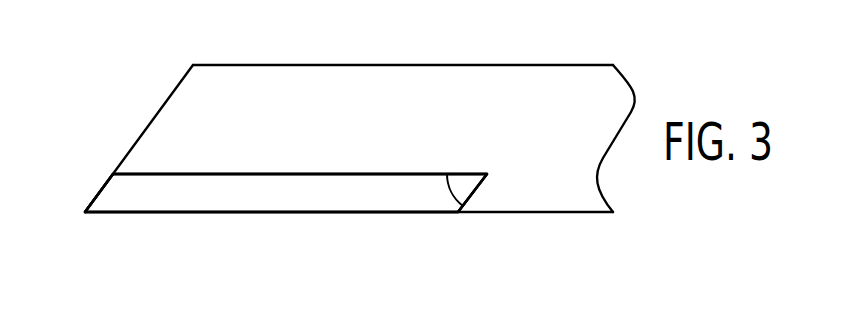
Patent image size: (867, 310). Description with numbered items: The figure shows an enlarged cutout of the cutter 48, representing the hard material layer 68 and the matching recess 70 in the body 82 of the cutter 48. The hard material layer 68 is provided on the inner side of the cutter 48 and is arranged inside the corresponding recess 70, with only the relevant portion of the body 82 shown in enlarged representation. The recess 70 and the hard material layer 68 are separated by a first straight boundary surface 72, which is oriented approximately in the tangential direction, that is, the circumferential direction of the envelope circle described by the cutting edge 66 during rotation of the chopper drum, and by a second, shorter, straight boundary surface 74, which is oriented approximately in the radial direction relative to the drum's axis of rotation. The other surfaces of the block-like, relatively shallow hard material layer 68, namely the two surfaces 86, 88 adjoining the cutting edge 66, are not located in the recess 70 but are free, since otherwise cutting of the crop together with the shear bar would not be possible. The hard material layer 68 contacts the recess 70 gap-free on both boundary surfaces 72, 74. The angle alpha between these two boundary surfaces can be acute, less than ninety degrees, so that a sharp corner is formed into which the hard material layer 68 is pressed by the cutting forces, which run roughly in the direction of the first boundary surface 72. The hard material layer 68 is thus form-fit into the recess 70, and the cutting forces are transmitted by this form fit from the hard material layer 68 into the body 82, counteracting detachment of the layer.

The cutter 48 is at (507, 48).
The body 82 is at (358, 78).
The surface adjoining the cutting edge 88 is at (100, 190).
The first straight boundary surface 72 is at (302, 174).
The surface adjoining the cutting edge 86 is at (294, 213).
The second straight boundary surface 74 is at (473, 192).
The cutting edge 66 is at (85, 212).
The hard material layer 68 is at (207, 198).
The recess 70 is at (392, 226).